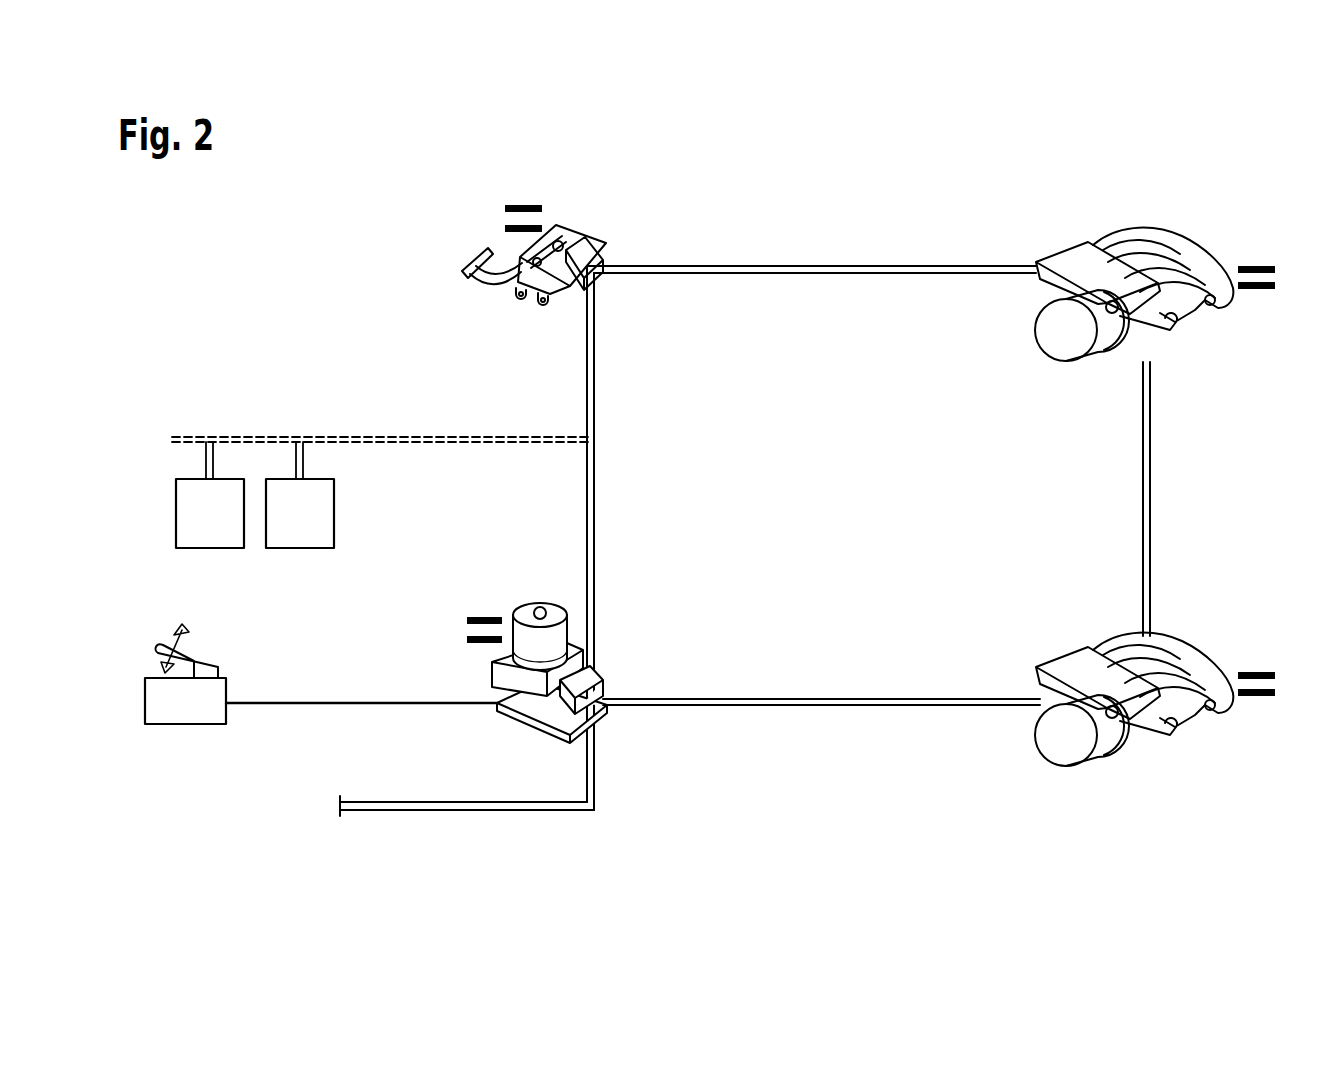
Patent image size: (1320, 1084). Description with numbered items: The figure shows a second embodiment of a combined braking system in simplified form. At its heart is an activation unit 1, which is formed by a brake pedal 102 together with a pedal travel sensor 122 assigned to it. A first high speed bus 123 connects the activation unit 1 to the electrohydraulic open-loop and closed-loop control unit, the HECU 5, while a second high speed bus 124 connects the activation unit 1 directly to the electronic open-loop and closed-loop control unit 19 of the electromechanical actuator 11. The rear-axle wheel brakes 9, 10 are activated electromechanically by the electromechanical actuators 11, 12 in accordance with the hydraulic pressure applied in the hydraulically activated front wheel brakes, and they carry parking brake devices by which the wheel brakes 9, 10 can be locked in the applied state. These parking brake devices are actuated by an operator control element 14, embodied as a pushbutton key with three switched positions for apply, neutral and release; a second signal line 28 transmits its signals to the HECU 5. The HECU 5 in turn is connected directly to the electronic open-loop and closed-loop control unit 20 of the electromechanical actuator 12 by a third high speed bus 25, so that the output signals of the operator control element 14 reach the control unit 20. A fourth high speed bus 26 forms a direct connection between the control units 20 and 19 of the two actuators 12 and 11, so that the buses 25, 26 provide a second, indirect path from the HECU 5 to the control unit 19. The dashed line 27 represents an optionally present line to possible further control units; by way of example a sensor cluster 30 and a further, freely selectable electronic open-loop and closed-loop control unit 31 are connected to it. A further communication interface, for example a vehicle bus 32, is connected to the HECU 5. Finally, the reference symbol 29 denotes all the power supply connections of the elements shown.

The activation unit 1 is at (511, 295).
The electrohydraulic open-loop and closed-loop control unit (HECU) 5 is at (540, 602).
The wheel brake 9 is at (1148, 230).
The wheel brake 10 is at (1172, 642).
The electromechanical actuator 11 is at (1072, 343).
The electromechanical actuator 12 is at (1076, 748).
The operator control element 14 is at (225, 656).
The electronic open-loop and closed-loop control unit 19 is at (1088, 262).
The electronic open-loop and closed-loop control unit 20 is at (1066, 664).
The third high speed bus 25 is at (840, 697).
The fourth high speed bus 26 is at (1151, 490).
The line 27 is at (359, 436).
The second signal line 28 is at (382, 700).
The power supply connections 29 is at (515, 204).
The sensor cluster 30 is at (334, 536).
The further electronic open-loop and closed-loop control unit 31 is at (176, 536).
The vehicle bus 32 is at (460, 812).
The brake pedal 102 is at (470, 258).
The pedal travel sensor 122 is at (586, 228).
The first high speed bus 123 is at (596, 496).
The second high speed bus 124 is at (855, 265).